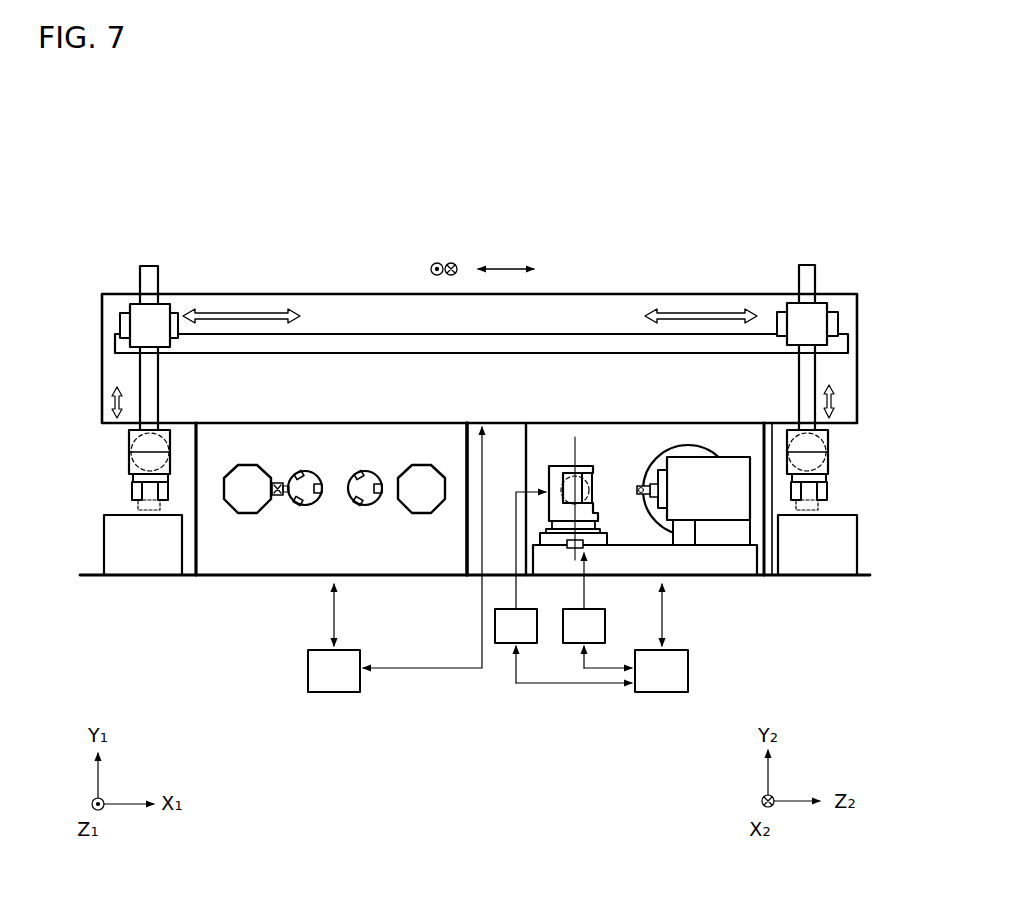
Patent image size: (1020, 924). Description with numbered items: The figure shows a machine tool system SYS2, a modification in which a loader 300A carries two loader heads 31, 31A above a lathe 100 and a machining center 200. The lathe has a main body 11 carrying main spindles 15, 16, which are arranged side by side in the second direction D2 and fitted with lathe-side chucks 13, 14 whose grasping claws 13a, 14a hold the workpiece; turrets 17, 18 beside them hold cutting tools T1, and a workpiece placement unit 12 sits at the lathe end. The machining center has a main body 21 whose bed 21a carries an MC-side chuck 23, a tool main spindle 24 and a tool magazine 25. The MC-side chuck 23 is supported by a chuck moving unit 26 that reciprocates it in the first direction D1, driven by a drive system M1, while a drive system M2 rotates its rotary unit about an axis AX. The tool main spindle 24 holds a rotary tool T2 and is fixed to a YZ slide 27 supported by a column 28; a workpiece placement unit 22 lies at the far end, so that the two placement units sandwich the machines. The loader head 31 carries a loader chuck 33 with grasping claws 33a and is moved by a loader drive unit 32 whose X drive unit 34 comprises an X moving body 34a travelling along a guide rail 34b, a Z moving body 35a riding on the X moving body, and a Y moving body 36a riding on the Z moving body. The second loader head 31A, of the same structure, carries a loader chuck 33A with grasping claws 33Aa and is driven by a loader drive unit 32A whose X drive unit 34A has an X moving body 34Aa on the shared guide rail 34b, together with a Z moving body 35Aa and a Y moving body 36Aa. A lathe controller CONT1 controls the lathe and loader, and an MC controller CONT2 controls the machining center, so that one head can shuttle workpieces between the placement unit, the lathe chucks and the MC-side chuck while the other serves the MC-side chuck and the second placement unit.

The main body 11 is at (448, 567).
The workpiece placement unit 12 is at (115, 567).
The lathe-side chuck 13 is at (296, 448).
The grasping claws 13a is at (296, 474).
The lathe-side chuck 14 is at (382, 448).
The grasping claws 14a is at (380, 483).
The main spindle 15 is at (308, 518).
The main spindle 16 is at (372, 515).
The turret 17 is at (236, 478).
The turret 18 is at (440, 478).
The main body 21 is at (669, 521).
The bed 21a is at (708, 566).
The workpiece placement unit 22 is at (837, 567).
The MC-side chuck 23 is at (585, 470).
The tool main spindle 24 is at (662, 469).
The tool magazine 25 is at (688, 447).
The chuck moving unit 26 is at (606, 504).
The YZ slide 27 is at (732, 462).
The column 28 is at (740, 537).
The loader head 31 is at (127, 457).
The loader head 31A is at (783, 422).
The loader drive unit 32 is at (104, 298).
The loader drive unit 32A is at (780, 306).
The loader chuck 33 is at (116, 485).
The grasping claws 33a is at (134, 500).
The loader chuck 33A is at (834, 570).
The grasping claws 33Aa is at (822, 500).
The X drive unit 34 is at (476, 269).
The X moving body 34a is at (175, 308).
The guide rail 34b is at (213, 237).
The X drive unit 34A is at (668, 270).
The X moving body 34Aa is at (777, 294).
The Z moving body 35a is at (138, 312).
The Z moving body 35Aa is at (820, 308).
The Y moving body 36a is at (153, 368).
The Y moving body 36Aa is at (788, 296).
The lathe 100 is at (475, 521).
The machining center 200 is at (673, 533).
The loader 300A is at (385, 291).
The machine tool system SYS2 is at (699, 141).
The axis AX is at (571, 447).
The cutting tool T1 is at (285, 493).
The rotary tool T2 is at (641, 495).
The first direction D1 is at (444, 254).
The second direction D2 is at (506, 251).
The drive system M1 is at (597, 610).
The drive system M2 is at (563, 587).
The lathe controller CONT1 is at (332, 695).
The MC controller CONT2 is at (663, 695).